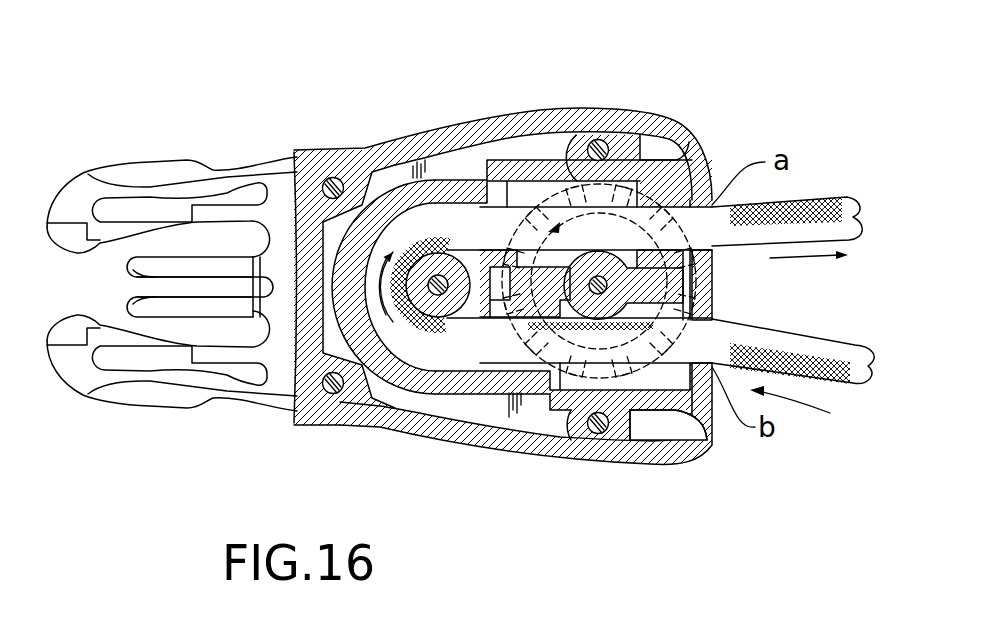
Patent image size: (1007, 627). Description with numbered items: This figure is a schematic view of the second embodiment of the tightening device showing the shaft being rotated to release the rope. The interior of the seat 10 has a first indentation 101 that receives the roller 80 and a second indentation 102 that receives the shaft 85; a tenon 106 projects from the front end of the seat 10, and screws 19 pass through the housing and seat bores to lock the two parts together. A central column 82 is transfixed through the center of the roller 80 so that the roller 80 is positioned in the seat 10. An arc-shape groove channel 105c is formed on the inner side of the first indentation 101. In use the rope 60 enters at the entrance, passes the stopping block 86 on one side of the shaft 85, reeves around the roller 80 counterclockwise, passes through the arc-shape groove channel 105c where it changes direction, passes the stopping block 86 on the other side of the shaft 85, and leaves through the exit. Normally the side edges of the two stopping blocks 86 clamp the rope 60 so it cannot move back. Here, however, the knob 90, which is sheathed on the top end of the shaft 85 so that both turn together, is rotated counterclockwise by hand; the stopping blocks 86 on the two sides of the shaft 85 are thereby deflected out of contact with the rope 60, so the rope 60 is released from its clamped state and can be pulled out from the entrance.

The seat 10 is at (460, 432).
The screws 19 is at (317, 427).
The rope 60 is at (843, 200).
The roller 80 is at (413, 243).
The central column 82 is at (447, 265).
The shaft 85 is at (603, 253).
The stopping blocks 86 is at (700, 288).
The knob 90 is at (520, 185).
The first indentation 101 is at (373, 240).
The second indentation 102 is at (570, 318).
The arc-shape groove channel 105c is at (378, 320).
The tenon 106 is at (117, 400).